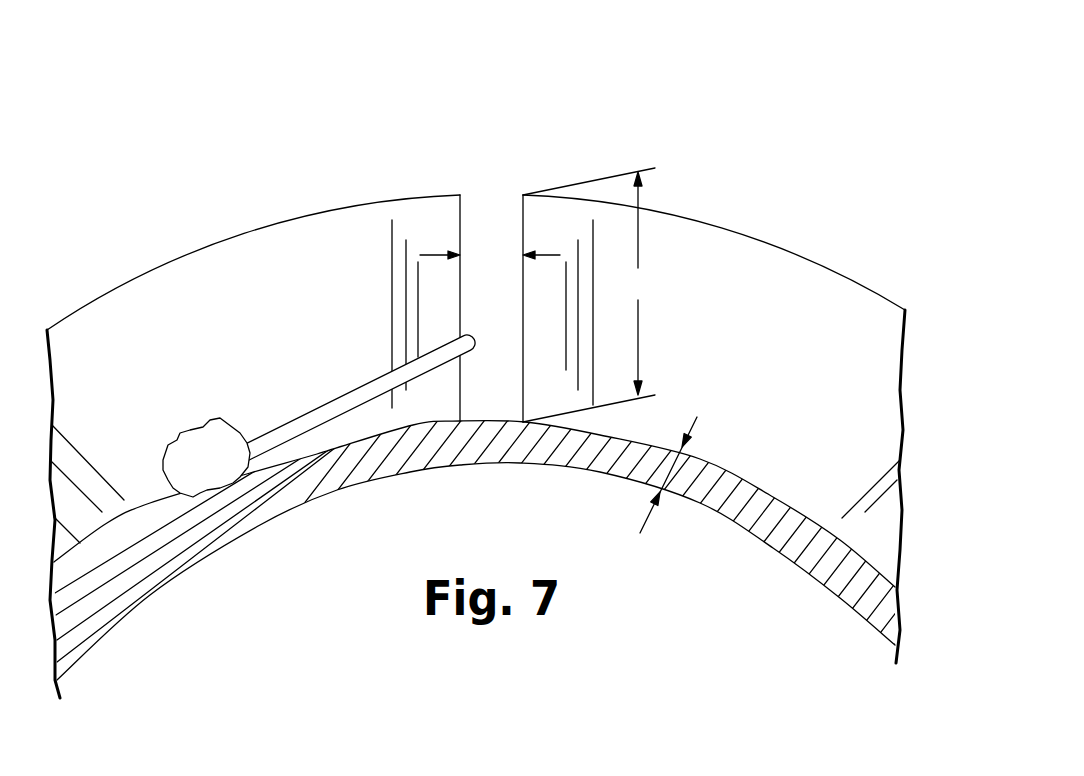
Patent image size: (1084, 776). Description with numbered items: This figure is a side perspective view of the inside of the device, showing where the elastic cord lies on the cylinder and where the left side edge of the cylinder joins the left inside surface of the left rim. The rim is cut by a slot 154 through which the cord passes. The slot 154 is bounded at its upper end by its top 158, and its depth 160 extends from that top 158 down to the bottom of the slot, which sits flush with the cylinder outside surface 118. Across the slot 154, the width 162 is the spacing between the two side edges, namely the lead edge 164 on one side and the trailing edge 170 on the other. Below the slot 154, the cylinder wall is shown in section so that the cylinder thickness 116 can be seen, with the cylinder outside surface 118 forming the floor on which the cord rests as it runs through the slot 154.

The cylinder thickness 116 is at (663, 476).
The cylinder outside surface 118 is at (767, 495).
The slot 154 is at (507, 138).
The slot top 158 is at (498, 200).
The slot depth 160 is at (590, 295).
The slot width 162 is at (490, 255).
The lead edge 164 is at (466, 228).
The trailing edge 170 is at (523, 390).